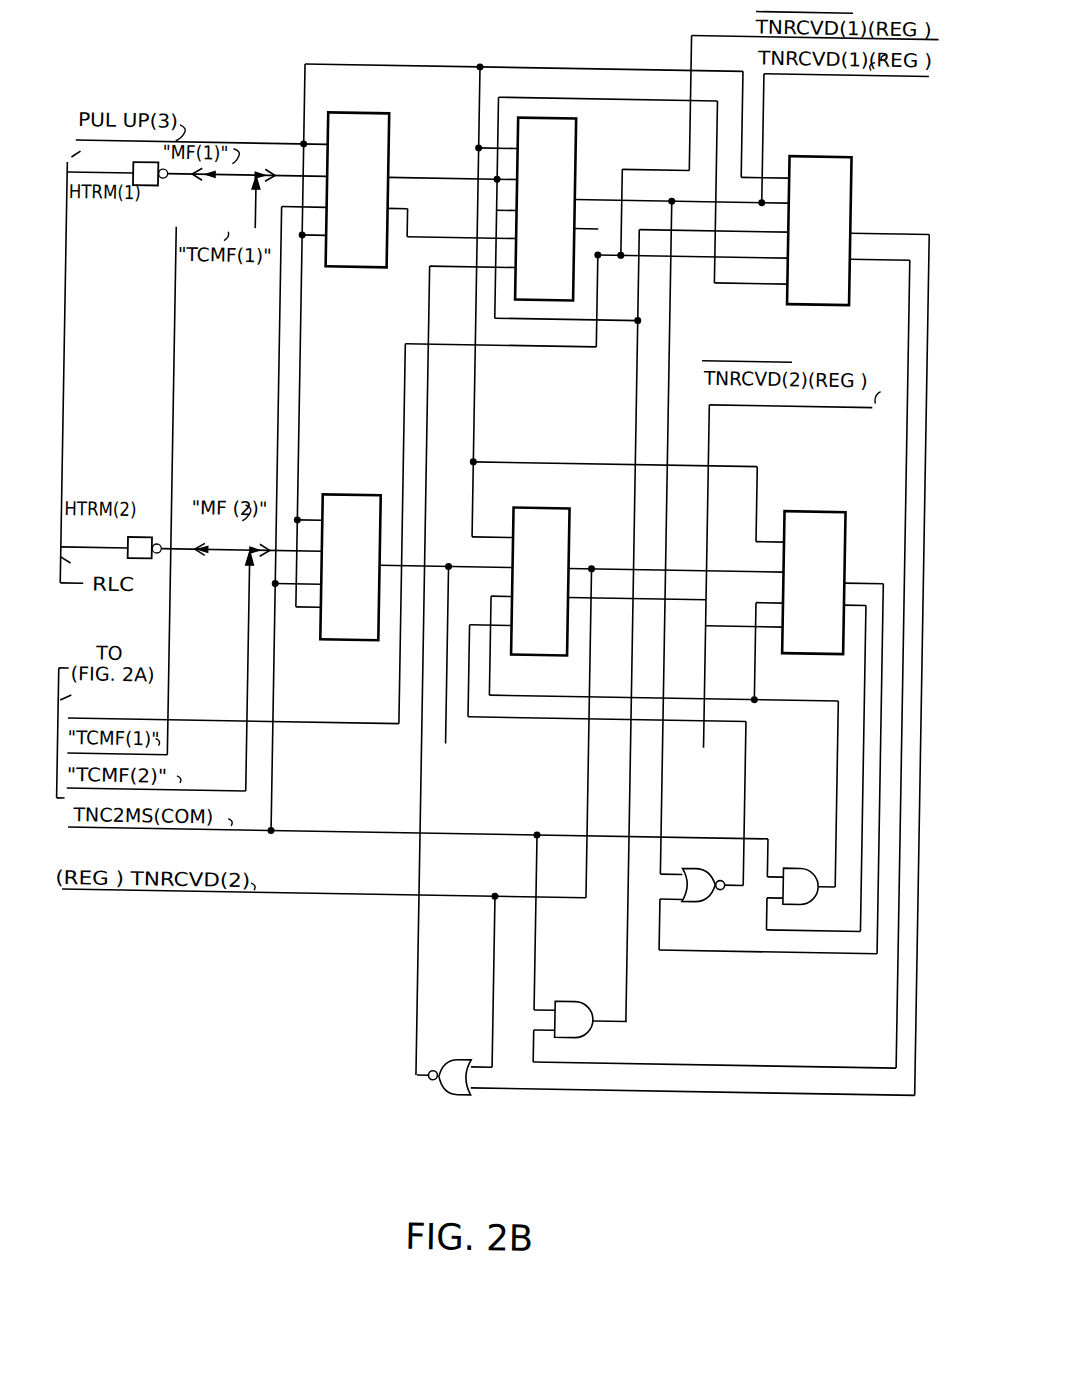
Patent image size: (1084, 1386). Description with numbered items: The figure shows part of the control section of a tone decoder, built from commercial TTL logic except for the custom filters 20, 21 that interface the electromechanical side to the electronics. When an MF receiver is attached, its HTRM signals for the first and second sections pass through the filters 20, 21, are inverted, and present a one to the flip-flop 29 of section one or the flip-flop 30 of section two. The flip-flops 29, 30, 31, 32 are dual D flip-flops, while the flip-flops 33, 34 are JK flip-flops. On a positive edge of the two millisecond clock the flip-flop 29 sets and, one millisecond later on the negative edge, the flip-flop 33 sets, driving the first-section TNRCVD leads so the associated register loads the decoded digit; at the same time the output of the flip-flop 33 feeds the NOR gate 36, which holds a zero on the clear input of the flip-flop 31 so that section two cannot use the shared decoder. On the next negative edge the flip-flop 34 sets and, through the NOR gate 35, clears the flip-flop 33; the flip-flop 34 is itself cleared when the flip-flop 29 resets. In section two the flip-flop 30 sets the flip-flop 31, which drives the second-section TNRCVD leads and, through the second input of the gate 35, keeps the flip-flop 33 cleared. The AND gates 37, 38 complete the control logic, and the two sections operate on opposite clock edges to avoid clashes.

The filter 20 is at (122, 173).
The filter 21 is at (144, 566).
The flip-flop 29 is at (384, 130).
The flip-flop 30 is at (345, 497).
The flip-flop 31 is at (560, 545).
The flip-flop 32 is at (800, 518).
The flip-flop 33 is at (570, 141).
The flip-flop 34 is at (832, 197).
The NOR gate 35 is at (455, 1060).
The NOR gate 36 is at (702, 898).
The AND gate 37 is at (565, 1015).
The AND gate 38 is at (795, 866).